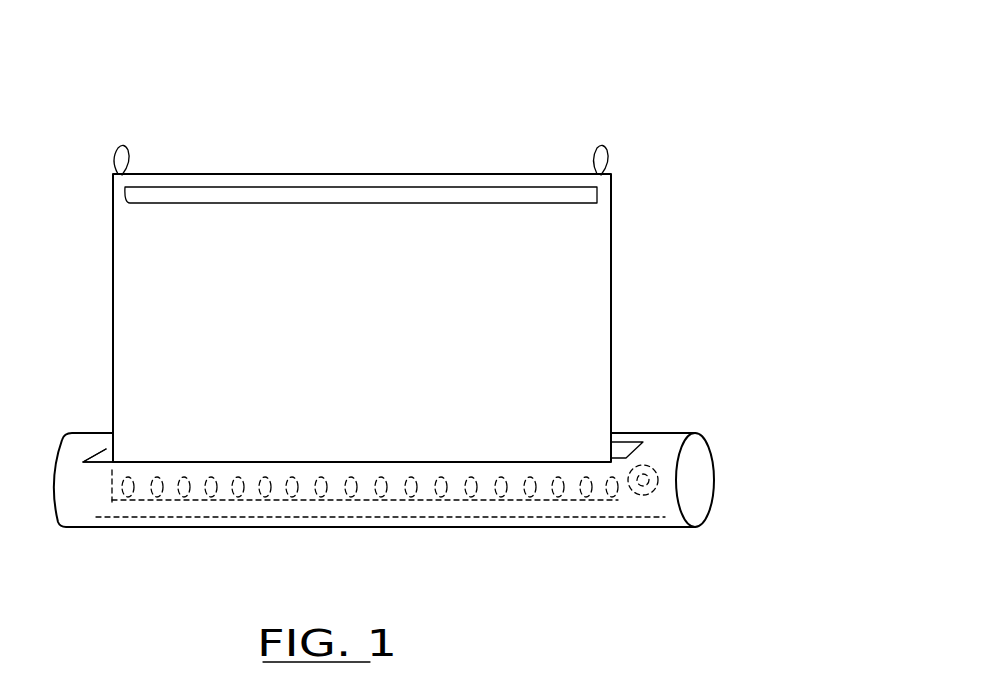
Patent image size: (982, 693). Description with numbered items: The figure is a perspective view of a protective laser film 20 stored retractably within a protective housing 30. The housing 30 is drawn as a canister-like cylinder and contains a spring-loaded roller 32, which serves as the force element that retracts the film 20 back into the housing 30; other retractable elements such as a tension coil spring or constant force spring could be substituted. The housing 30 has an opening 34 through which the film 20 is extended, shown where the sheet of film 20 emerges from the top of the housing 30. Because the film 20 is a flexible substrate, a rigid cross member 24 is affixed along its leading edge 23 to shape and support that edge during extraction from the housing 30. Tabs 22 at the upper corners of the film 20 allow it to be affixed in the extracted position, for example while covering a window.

The protective laser film 20 is at (537, 331).
The tabs 22 is at (124, 146).
The leading edge 23 is at (355, 174).
The rigid cross member 24 is at (552, 192).
The protective housing 30 is at (716, 482).
The spring-loaded roller 32 is at (190, 500).
The opening 34 is at (110, 449).